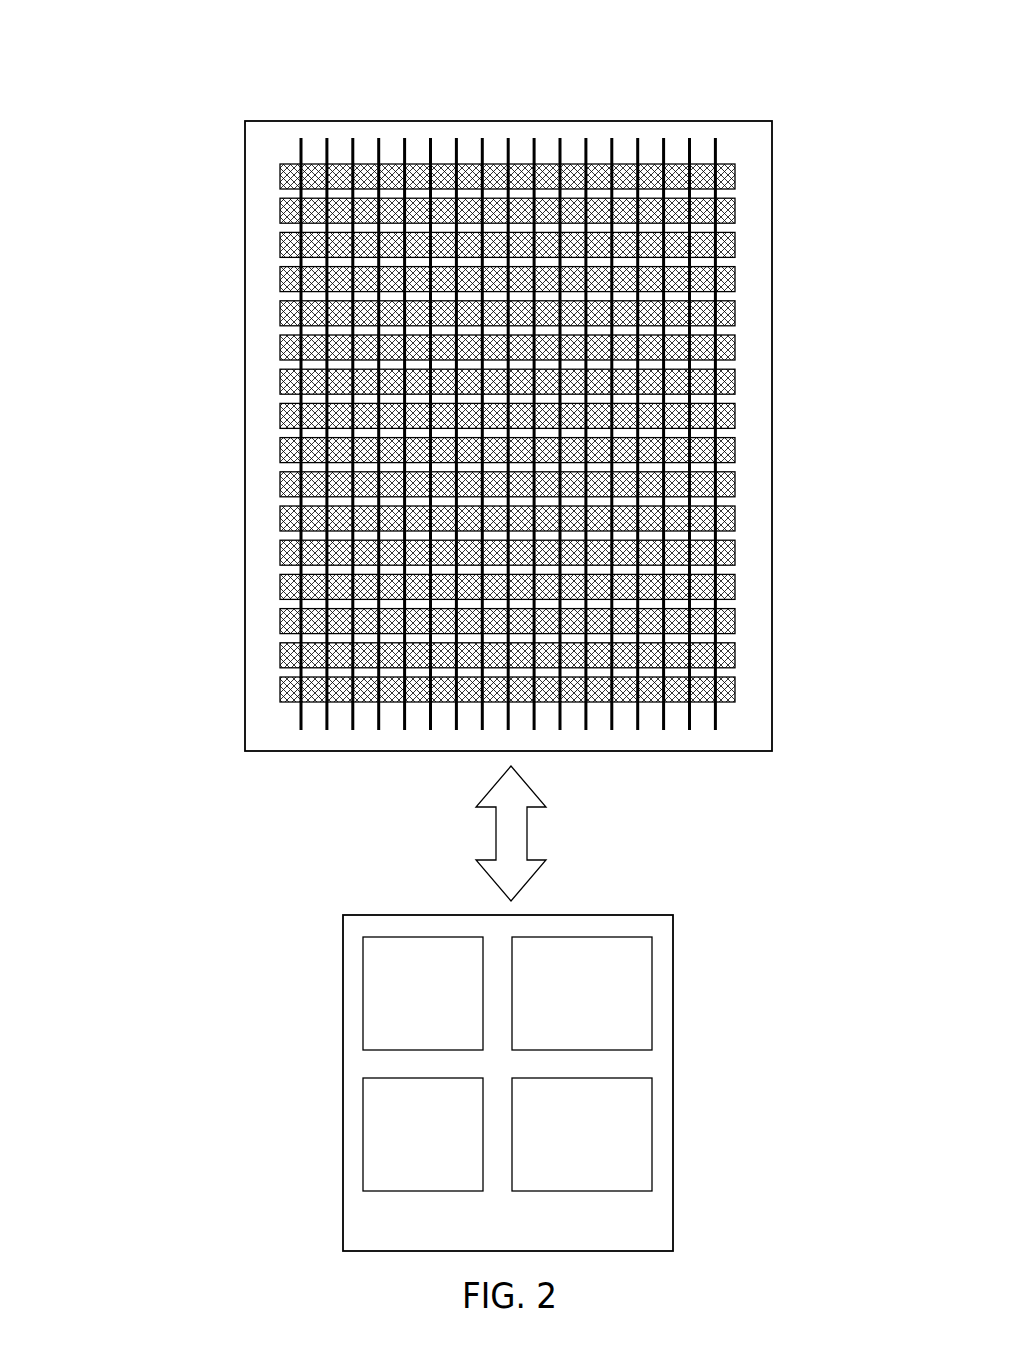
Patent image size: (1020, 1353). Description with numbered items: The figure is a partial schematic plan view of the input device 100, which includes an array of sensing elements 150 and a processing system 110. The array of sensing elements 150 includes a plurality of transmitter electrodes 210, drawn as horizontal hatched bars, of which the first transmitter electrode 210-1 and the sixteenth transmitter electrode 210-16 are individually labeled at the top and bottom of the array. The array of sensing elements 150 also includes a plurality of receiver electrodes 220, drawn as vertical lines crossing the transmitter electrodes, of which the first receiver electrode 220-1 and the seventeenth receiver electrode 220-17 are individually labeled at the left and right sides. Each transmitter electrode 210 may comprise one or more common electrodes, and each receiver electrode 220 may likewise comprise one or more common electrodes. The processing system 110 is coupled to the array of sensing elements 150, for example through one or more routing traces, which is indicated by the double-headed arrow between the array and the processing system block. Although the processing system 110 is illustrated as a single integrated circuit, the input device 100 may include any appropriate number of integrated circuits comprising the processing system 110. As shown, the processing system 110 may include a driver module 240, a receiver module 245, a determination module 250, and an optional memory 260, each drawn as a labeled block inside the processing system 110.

The input device 100 is at (211, 53).
The array of sensing elements 150 is at (364, 153).
The transmitter electrodes 210 is at (110, 710).
The first transmitter electrode 210-1 is at (280, 173).
The sixteenth transmitter electrode 210-16 is at (280, 690).
The receiver electrodes 220 is at (723, 103).
The first receiver electrode 220-1 is at (301, 150).
The seventeenth receiver electrode 220-17 is at (715, 145).
The processing system 110 is at (631, 1228).
The driver module 240 is at (405, 1028).
The receiver module 245 is at (405, 1167).
The determination module 250 is at (564, 1167).
The optional memory 260 is at (564, 1028).